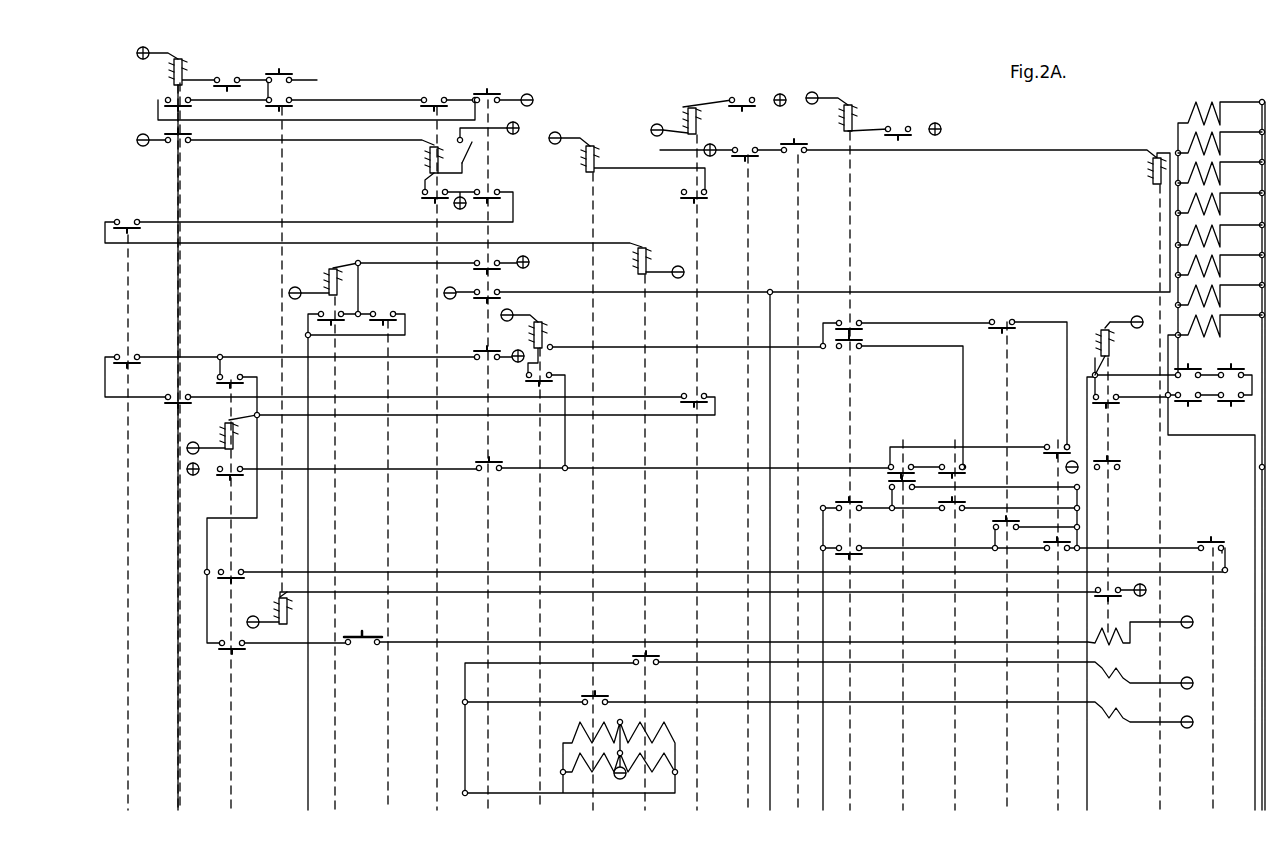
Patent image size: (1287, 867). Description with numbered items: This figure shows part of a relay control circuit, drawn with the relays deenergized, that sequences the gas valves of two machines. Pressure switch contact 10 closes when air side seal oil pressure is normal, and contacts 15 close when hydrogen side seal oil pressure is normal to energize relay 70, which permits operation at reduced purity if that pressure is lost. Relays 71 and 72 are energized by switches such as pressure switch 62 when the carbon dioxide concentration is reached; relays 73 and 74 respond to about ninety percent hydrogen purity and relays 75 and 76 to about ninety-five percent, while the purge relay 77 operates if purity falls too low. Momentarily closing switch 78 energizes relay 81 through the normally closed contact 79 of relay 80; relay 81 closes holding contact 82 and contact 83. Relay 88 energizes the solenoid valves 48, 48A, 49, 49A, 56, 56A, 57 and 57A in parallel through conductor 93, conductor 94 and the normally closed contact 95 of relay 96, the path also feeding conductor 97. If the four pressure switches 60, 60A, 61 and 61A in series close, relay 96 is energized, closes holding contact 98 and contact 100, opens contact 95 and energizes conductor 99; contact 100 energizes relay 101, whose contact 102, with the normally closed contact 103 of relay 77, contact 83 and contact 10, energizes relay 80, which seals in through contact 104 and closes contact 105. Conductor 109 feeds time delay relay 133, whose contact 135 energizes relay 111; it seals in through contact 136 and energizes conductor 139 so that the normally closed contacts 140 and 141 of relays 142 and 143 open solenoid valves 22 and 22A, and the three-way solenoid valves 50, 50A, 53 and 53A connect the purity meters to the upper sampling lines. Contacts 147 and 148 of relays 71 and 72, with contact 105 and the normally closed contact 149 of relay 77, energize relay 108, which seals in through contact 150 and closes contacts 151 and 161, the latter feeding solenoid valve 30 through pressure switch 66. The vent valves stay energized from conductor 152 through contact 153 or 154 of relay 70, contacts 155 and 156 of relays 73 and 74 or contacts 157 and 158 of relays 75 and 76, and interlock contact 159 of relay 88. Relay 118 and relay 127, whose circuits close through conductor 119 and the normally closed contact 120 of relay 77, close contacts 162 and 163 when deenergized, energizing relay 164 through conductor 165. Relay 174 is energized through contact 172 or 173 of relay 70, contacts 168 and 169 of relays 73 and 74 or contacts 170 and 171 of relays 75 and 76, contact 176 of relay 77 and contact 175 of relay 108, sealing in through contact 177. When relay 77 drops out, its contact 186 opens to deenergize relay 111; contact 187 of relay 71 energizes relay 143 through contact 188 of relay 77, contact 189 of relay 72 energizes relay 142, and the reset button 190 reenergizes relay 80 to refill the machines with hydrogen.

The pressure switch contact 10 is at (232, 75).
The contacts 15 is at (900, 125).
The solenoid valve 22 is at (1115, 704).
The solenoid valve 22A is at (1112, 664).
The solenoid valve 30 is at (1120, 632).
The solenoid valve 48 is at (1222, 112).
The solenoid valve 48A is at (1215, 145).
The solenoid valve 49 is at (1222, 172).
The solenoid valve 49A is at (1215, 205).
The three-way solenoid valve 50 is at (602, 770).
The three-way solenoid valve 50A is at (665, 765).
The three-way solenoid valve 53 is at (575, 730).
The three-way solenoid valve 53A is at (666, 724).
The solenoid valve 56 is at (1222, 234).
The solenoid valve 56A is at (1215, 265).
The solenoid valve 57 is at (1222, 294).
The solenoid valve 57A is at (1215, 325).
The contact 60 is at (1194, 362).
The contact 60A is at (1228, 368).
The contact 61 is at (1192, 402).
The contact 61A is at (1228, 402).
The pressure switch 62 is at (745, 96).
The pressure switch 66 is at (372, 622).
The relay 70 is at (860, 790).
The relay 71 is at (705, 676).
The relay 72 is at (140, 686).
The relay 73 is at (903, 740).
The relay 74 is at (955, 740).
The relay 75 is at (1007, 740).
The relay 76 is at (1058, 740).
The purge relay 77 is at (498, 612).
The switch 78 is at (458, 150).
The normally closed contact 79 is at (185, 136).
The relay 80 is at (178, 618).
The relay 81 is at (437, 676).
The contact 82 is at (425, 200).
The contact 83 is at (432, 98).
The relay 88 is at (1213, 778).
The conductor 93 is at (1255, 692).
The conductor 94 is at (1245, 456).
The normally closed contact 95 is at (1112, 460).
The relay 96 is at (1118, 510).
The conductor 97 is at (1265, 720).
The holding contact 98 is at (1110, 392).
The conductor 99 is at (1097, 740).
The contact 100 is at (1112, 598).
The relay 101 is at (290, 160).
The contact 102 is at (287, 110).
The normally closed contact 103 is at (490, 92).
The sealing contact 104 is at (185, 110).
The contact 105 is at (172, 410).
The relay 108 is at (225, 688).
The conductor 109 is at (308, 697).
The relay 111 is at (342, 697).
The relay 118 is at (738, 728).
The conductor 119 is at (773, 750).
The normally closed contact 120 is at (492, 286).
The relay 127 is at (798, 778).
The time delay relay 133 is at (388, 690).
The contact 135 is at (388, 310).
The sealing contact 136 is at (335, 320).
The conductor 139 is at (465, 672).
The normally closed contact 140 is at (640, 658).
The normally closed contact 141 is at (600, 696).
The relay 142 is at (652, 328).
The relay 143 is at (600, 604).
The contact 147 is at (688, 400).
The contact 148 is at (132, 352).
The normally closed contact 149 is at (480, 352).
The sealing contact 150 is at (235, 372).
The contact 151 is at (236, 580).
The conductor 152 is at (826, 766).
The contact 153 is at (840, 502).
The contact 154 is at (855, 554).
The contact 155 is at (892, 486).
The contact 156 is at (958, 504).
The contact 157 is at (1010, 523).
The contact 158 is at (1050, 554).
The interlock contact 159 is at (1205, 540).
The contact 161 is at (225, 652).
The contact 162 is at (735, 145).
The contact 163 is at (784, 145).
The relay 164 is at (1160, 782).
The conductor 165 is at (985, 292).
The contact 168 is at (904, 462).
The contact 169 is at (963, 478).
The contact 170 is at (1008, 318).
The contact 171 is at (1045, 458).
The contact 172 is at (855, 350).
The contact 173 is at (862, 330).
The relay 174 is at (530, 722).
The contact 175 is at (222, 476).
The contact 176 is at (486, 462).
The sealing contact 177 is at (530, 380).
The relay contact 186 is at (476, 260).
The contact 187 is at (697, 200).
The contact 188 is at (492, 190).
The contact 189 is at (125, 216).
The reset button 190 is at (288, 68).